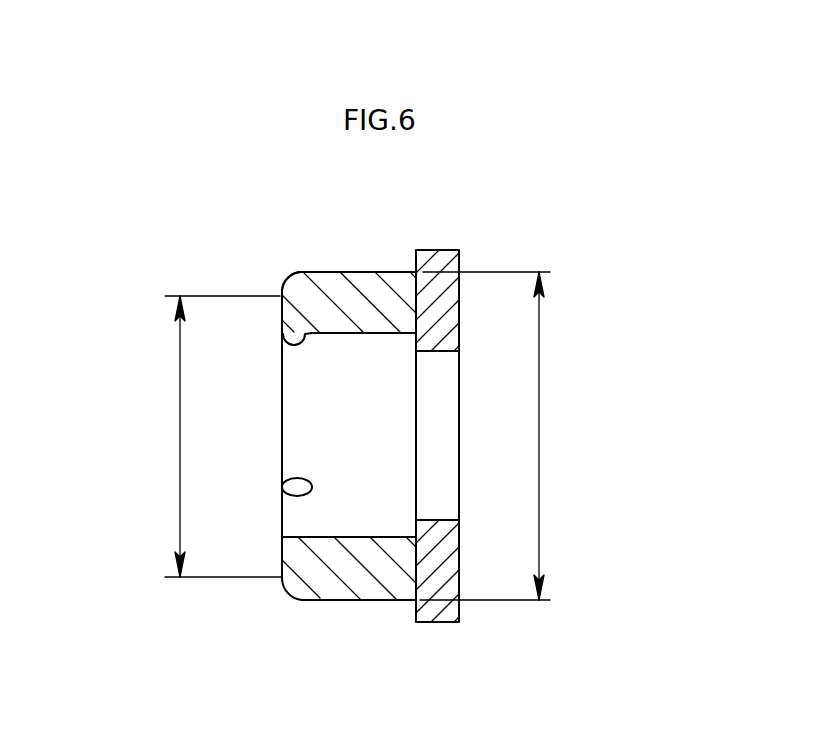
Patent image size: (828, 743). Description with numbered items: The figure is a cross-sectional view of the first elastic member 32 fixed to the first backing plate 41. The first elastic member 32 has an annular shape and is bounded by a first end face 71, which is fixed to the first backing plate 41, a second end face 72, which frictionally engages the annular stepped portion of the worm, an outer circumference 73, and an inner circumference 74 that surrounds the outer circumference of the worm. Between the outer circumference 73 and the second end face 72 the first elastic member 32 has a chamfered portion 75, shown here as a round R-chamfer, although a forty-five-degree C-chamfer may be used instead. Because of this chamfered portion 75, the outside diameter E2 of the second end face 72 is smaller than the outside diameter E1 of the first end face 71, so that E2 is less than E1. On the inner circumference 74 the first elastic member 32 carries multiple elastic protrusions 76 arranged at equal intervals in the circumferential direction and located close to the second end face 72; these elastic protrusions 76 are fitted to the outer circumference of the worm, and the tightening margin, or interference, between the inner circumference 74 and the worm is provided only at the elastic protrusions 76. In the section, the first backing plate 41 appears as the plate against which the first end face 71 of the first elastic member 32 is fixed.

The first elastic member 32 is at (351, 272).
The first backing plate 41 is at (437, 257).
The first end face 71 is at (418, 318).
The second end face 72 is at (280, 303).
The outer circumference 73 is at (340, 602).
The inner circumference 74 is at (317, 536).
The chamfered portion 75 is at (286, 277).
The elastic protrusions 76 is at (293, 340).
The outside diameter of the first end face E1 is at (540, 433).
The outside diameter of the second end face E2 is at (178, 433).